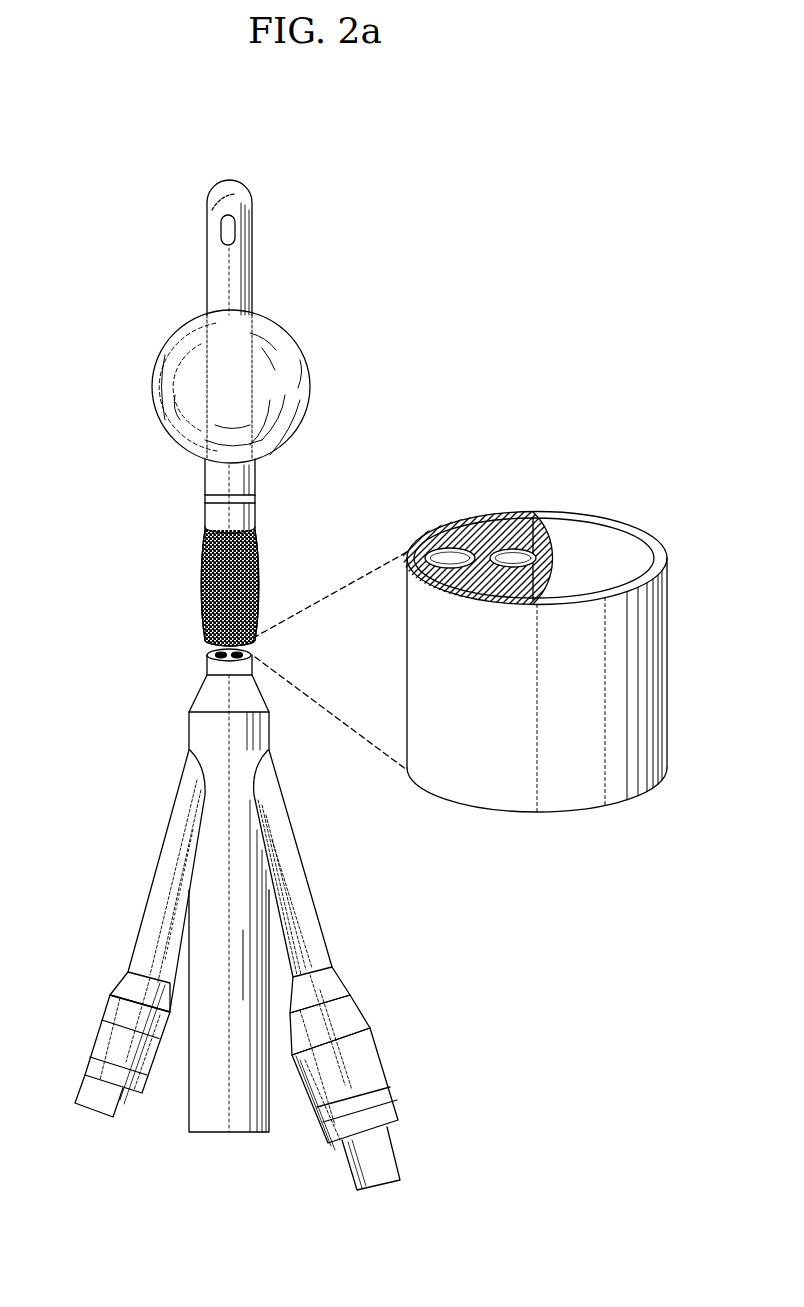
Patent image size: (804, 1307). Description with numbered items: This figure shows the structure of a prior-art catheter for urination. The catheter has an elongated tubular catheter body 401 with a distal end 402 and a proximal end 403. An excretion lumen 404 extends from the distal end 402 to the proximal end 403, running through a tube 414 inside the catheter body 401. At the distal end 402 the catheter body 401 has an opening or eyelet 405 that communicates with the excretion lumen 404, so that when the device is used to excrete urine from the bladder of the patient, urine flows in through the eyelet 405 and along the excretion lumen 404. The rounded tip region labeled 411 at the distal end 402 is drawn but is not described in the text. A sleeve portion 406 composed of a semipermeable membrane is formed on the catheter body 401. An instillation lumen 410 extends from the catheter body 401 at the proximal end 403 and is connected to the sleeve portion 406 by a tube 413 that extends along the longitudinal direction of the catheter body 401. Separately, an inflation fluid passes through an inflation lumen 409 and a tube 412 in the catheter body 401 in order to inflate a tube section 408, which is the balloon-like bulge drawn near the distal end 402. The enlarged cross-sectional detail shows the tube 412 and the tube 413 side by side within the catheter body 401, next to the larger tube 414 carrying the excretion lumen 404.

The catheter body 401 is at (205, 513).
The distal end 402 is at (117, 270).
The proximal end 403 is at (360, 887).
The excretion lumen 404 is at (205, 1122).
The eyelet 405 is at (238, 229).
The sleeve portion 406 is at (203, 541).
The tube section 408 is at (290, 368).
The inflation lumen 409 is at (98, 1037).
The instillation lumen 410 is at (385, 1055).
The catheter tip 411 is at (208, 193).
The tube 412 is at (462, 548).
The tube 413 is at (521, 528).
The tube 414 is at (607, 560).